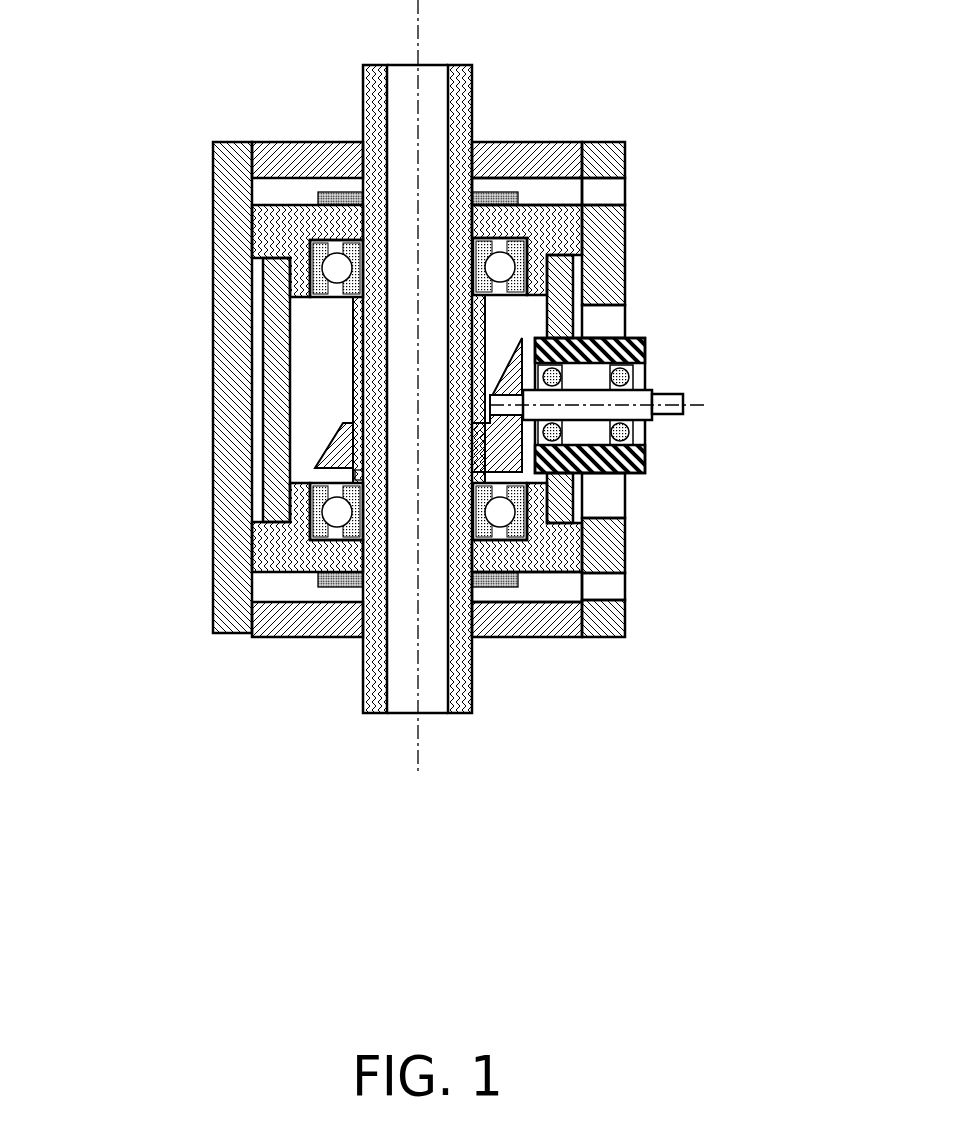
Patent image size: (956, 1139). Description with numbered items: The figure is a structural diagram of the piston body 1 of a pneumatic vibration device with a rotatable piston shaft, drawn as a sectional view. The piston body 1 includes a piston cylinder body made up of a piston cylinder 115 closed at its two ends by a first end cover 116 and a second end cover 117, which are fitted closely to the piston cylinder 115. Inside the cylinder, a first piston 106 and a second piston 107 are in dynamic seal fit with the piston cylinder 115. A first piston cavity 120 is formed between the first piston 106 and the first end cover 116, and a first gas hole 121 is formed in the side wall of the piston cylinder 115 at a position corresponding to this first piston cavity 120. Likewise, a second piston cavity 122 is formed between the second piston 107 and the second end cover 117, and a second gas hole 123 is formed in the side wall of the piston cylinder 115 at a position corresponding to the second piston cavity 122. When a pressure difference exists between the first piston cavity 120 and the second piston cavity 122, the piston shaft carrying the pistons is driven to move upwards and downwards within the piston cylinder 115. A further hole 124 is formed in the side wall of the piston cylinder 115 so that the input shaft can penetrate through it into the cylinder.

The piston body 1 is at (437, 338).
The first piston 106 is at (305, 225).
The second piston 107 is at (305, 550).
The piston cylinder 115 is at (228, 397).
The first end cover 116 is at (328, 152).
The second end cover 117 is at (315, 620).
The first piston cavity 120 is at (550, 190).
The first gas hole 121 is at (610, 192).
The second piston cavity 122 is at (535, 592).
The second gas hole 123 is at (598, 588).
The hole 124 is at (608, 498).